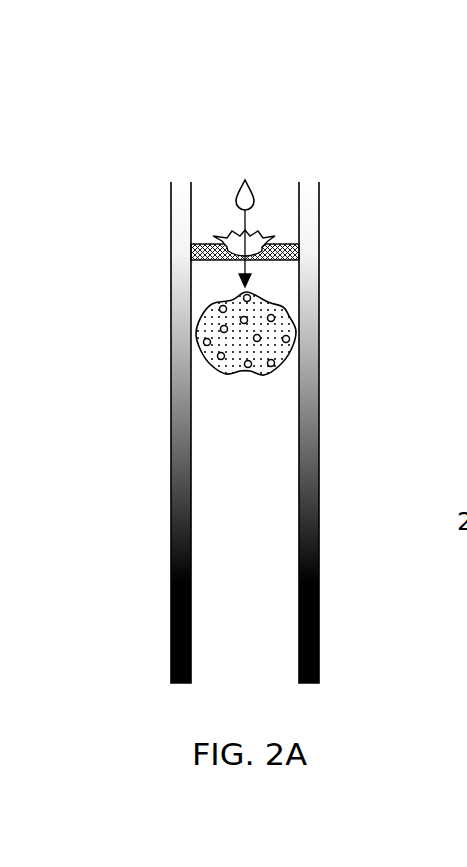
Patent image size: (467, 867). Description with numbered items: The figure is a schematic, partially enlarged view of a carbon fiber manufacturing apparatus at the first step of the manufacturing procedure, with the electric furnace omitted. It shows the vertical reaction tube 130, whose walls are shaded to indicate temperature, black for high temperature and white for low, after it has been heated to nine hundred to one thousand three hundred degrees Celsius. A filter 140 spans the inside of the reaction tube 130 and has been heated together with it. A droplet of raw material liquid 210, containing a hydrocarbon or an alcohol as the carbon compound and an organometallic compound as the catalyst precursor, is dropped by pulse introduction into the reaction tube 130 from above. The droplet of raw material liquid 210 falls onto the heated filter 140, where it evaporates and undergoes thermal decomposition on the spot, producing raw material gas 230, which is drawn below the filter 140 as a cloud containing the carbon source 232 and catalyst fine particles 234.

The reaction tube 130 is at (182, 424).
The filter 140 is at (299, 250).
The raw material liquid 210 is at (246, 180).
The raw material gas 230 is at (260, 328).
The carbon source 232 is at (213, 316).
The catalyst fine particles 234 is at (261, 340).